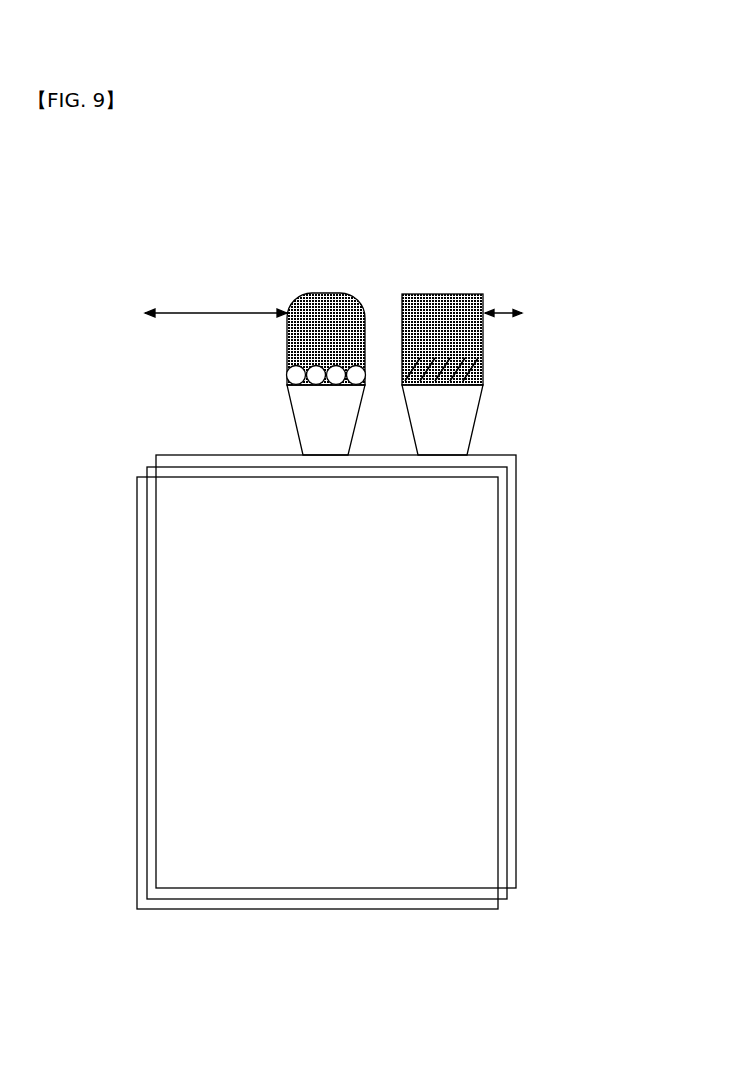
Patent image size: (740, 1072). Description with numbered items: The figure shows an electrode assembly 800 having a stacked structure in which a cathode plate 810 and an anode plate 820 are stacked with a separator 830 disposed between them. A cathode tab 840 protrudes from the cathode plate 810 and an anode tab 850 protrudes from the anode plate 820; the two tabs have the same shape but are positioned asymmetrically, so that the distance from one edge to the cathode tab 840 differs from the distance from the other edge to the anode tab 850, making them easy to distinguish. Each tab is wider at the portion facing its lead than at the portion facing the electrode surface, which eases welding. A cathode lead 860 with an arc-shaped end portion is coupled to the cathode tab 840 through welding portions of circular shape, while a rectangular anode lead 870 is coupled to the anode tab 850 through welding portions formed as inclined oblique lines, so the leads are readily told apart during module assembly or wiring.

The electrode assembly 800 is at (306, 565).
The cathode plate 810 is at (163, 632).
The anode plate 820 is at (138, 708).
The separator 830 is at (148, 670).
The cathode tab 840 is at (315, 398).
The anode tab 850 is at (460, 407).
The cathode lead 860 is at (315, 323).
The anode lead 870 is at (460, 323).